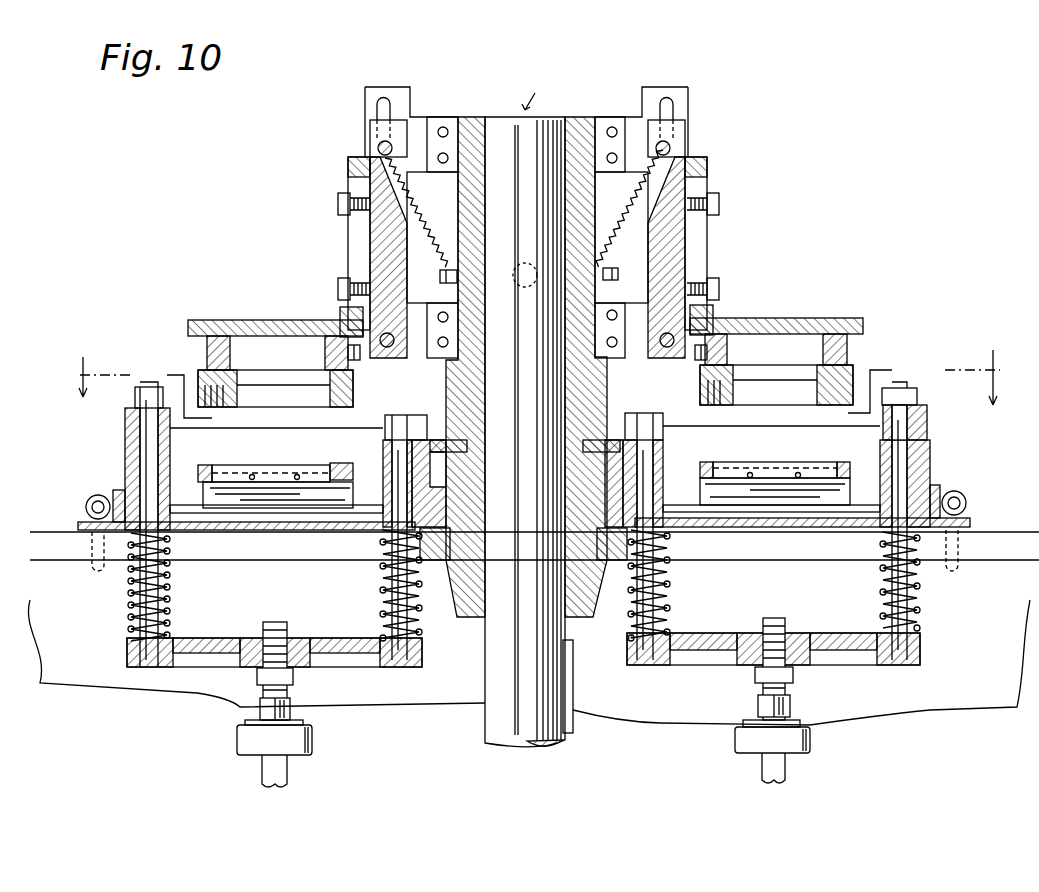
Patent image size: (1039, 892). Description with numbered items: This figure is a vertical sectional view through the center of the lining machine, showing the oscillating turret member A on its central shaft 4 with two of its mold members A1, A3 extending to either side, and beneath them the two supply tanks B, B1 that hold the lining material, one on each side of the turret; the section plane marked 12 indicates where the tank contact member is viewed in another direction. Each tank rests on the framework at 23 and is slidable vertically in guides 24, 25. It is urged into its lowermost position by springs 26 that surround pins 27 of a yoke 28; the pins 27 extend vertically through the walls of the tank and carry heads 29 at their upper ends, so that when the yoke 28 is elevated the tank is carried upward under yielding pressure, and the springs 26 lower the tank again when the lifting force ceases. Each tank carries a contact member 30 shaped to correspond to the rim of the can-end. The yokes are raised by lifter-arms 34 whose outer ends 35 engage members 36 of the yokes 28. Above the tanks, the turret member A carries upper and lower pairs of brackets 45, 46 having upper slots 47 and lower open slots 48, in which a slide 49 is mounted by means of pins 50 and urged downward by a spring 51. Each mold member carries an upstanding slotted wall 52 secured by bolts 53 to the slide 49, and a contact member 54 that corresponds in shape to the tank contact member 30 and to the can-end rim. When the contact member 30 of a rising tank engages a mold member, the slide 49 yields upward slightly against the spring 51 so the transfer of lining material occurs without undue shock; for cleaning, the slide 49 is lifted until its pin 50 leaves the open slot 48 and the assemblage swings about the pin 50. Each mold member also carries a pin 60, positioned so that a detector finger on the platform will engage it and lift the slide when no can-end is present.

The shaft 4 is at (529, 432).
The section line 12 is at (536, 384).
The framework 23 is at (248, 563).
The guide 24 is at (115, 492).
The guide 25 is at (437, 440).
The spring 26 is at (128, 617).
The pin 27 is at (148, 578).
The yoke 28 is at (205, 647).
The head 29 is at (130, 435).
The contact member 30 is at (210, 465).
The lifter-arm 34 is at (262, 776).
The outer end 35 is at (237, 745).
The member 36 is at (262, 710).
The upper bracket 45 is at (418, 122).
The lower bracket 46 is at (415, 303).
The upper slot 47 is at (377, 102).
The lower open slot 48 is at (700, 303).
The slide 49 is at (385, 244).
The pin 50 is at (667, 140).
The spring 51 is at (417, 212).
The upstanding slotted wall 52 is at (348, 226).
The bolt 53 is at (338, 200).
The contact member 54 is at (263, 393).
The pin 60 is at (355, 360).
The turret member A is at (524, 93).
The mold member A1 is at (265, 313).
The mold member A3 is at (752, 313).
The supply tank B is at (278, 471).
The supply tank B1 is at (775, 468).